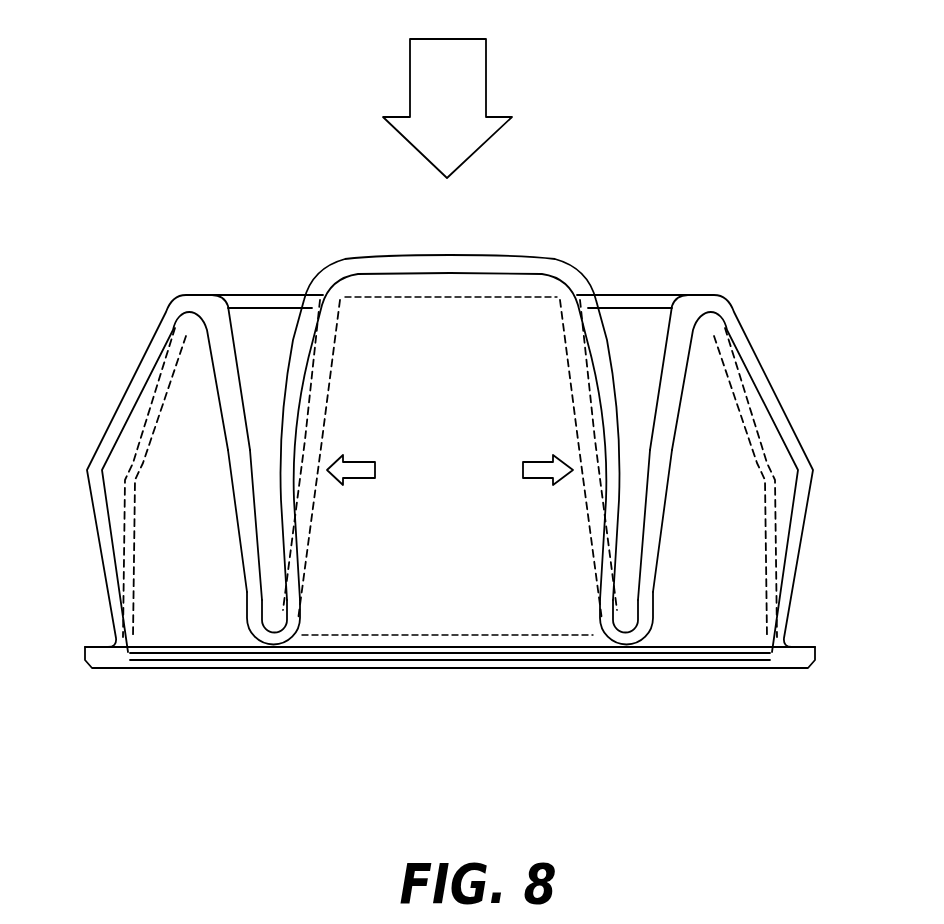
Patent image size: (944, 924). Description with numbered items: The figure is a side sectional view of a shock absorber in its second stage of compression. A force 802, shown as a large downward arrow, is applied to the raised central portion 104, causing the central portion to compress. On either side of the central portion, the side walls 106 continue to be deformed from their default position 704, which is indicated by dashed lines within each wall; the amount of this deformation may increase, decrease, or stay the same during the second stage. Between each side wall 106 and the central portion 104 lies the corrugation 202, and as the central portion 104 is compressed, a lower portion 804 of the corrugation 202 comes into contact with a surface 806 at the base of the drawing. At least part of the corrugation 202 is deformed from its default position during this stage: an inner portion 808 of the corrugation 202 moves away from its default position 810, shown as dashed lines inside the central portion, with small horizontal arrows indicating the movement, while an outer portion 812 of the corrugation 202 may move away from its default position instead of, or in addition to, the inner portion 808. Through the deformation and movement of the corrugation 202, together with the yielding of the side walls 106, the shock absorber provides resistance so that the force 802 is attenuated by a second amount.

The raised central portion 104 is at (555, 262).
The side walls 106 is at (130, 392).
The corrugation 202 is at (258, 323).
The original position 704 is at (123, 567).
The force 802 is at (467, 78).
The lower portion 804 is at (275, 634).
The surface 806 is at (493, 661).
The inner portion 808 is at (298, 347).
The default position 810 is at (315, 422).
The outer portion 812 is at (233, 443).